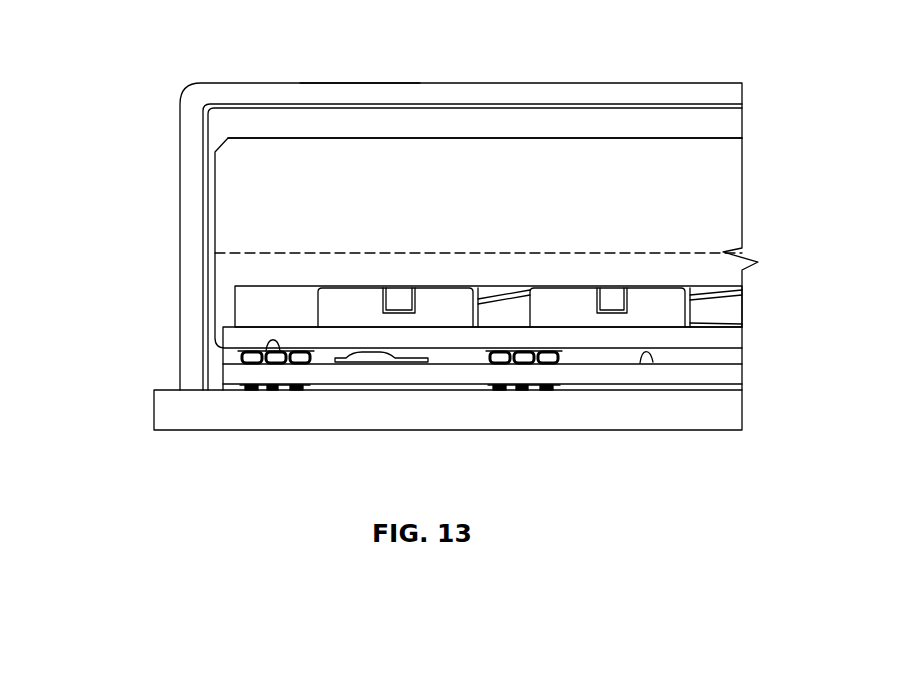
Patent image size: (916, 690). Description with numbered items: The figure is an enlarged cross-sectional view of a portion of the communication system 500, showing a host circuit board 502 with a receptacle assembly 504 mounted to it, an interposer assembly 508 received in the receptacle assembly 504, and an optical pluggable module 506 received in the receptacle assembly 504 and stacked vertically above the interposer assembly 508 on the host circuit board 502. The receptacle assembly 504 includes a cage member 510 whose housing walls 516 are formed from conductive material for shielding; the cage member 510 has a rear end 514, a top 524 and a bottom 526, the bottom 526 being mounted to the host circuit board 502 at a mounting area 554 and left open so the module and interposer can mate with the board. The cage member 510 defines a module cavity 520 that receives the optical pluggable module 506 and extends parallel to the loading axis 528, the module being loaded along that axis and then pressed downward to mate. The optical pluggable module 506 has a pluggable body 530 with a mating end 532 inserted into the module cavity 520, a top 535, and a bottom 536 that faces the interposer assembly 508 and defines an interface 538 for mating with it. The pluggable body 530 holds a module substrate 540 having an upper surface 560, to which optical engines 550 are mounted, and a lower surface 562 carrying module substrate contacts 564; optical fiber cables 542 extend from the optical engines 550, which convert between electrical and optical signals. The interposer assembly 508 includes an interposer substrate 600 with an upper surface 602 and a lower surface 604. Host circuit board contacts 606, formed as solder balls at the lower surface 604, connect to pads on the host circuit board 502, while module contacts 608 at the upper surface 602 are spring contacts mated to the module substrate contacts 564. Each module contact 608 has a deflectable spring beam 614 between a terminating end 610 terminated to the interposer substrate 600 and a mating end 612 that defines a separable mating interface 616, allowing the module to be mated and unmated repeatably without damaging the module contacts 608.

The communication system 500 is at (622, 30).
The host circuit board 502 is at (732, 408).
The receptacle assembly 504 is at (219, 83).
The optical pluggable module 506 is at (727, 156).
The interposer assembly 508 is at (690, 378).
The cage member 510 is at (707, 100).
The rear end 514 is at (173, 251).
The walls 516 is at (622, 100).
The module cavity 520 is at (222, 132).
The top 524 is at (350, 83).
The bottom 526 is at (190, 393).
The loading axis 528 is at (697, 253).
The pluggable body 530 is at (380, 167).
The mating end 532 is at (212, 225).
The top 535 is at (305, 136).
The bottom 536 is at (214, 350).
The interface 538 is at (223, 357).
The module substrate 540 is at (732, 341).
The optical fiber cables 542 is at (503, 293).
The optical engines 550 is at (431, 286).
The mounting area 554 is at (208, 389).
The upper surface 560 is at (714, 326).
The lower surface 562 is at (703, 348).
The module substrate contacts 564 is at (485, 352).
The interposer substrate 600 is at (728, 373).
The upper surface 602 is at (653, 362).
The lower surface 604 is at (618, 391).
The host circuit board contacts 606 is at (497, 390).
The module contacts 608 is at (312, 362).
The terminating end 610 is at (266, 352).
The mating end 612 is at (282, 364).
The deflectable spring beam 614 is at (232, 368).
The separable mating interface 616 is at (240, 344).